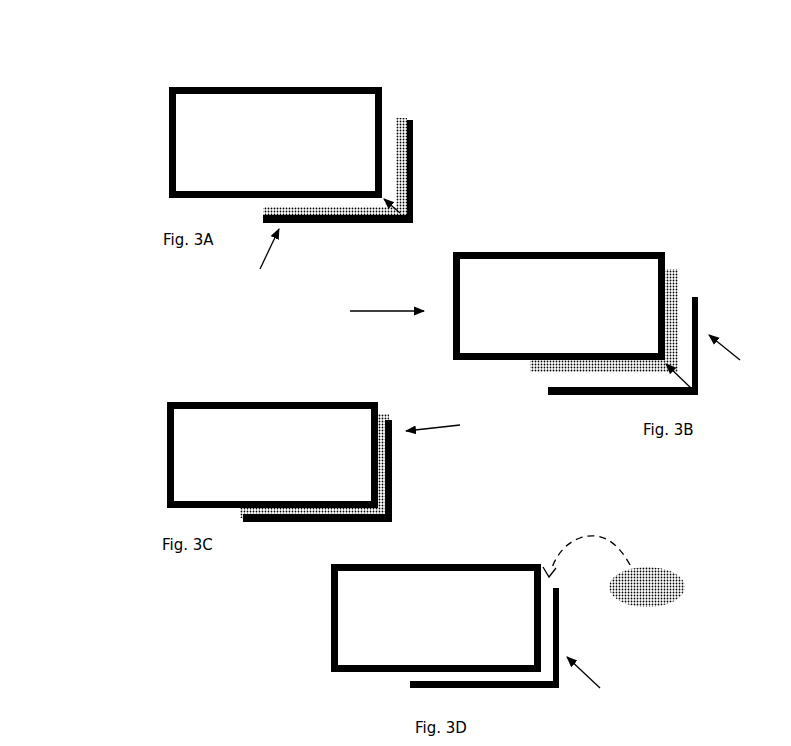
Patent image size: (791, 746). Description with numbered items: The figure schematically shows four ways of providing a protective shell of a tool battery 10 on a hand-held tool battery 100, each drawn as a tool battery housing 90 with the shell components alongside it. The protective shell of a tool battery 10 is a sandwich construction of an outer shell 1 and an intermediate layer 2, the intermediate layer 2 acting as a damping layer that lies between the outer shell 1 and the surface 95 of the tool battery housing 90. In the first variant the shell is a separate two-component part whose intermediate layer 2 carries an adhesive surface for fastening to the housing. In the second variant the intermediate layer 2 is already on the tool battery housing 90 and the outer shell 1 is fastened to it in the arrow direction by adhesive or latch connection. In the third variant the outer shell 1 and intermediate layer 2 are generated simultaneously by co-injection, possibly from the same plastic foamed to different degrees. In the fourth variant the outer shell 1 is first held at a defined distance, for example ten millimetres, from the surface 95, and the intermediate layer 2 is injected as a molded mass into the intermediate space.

In FIG. 3A, the hand-held tool battery 100 is at (121, 64).
In FIG. 3B, the hand-held tool battery 100 is at (535, 230).
In FIG. 3C, the hand-held tool battery 100 is at (155, 379).
In FIG. 3A, the tool battery housing 90 is at (306, 87).
In FIG. 3B, the tool battery housing 90 is at (617, 252).
In FIG. 3C, the tool battery housing 90 is at (259, 402).
In FIG. 3D, the tool battery housing 90 is at (474, 564).
In FIG. 3A, the outer shell 1 is at (413, 143).
In FIG. 3B, the outer shell 1 is at (583, 393).
In FIG. 3C, the outer shell 1 is at (285, 517).
In FIG. 3D, the outer shell 1 is at (490, 687).
In FIG. 3A, the intermediate layer 2 is at (398, 177).
In FIG. 3B, the intermediate layer 2 is at (674, 282).
In FIG. 3C, the intermediate layer 2 is at (386, 510).
In FIG. 3D, the intermediate layer 2 is at (655, 577).
In FIG. 3A, the protective shell of a tool battery 10 is at (262, 262).
In FIG. 3B, the protective shell of a tool battery 10 is at (544, 341).
In FIG. 3C, the protective shell of a tool battery 10 is at (447, 424).
In FIG. 3D, the protective shell of a tool battery 10 is at (594, 679).
In FIG. 3D, the surface of the tool battery housing 95 is at (428, 677).